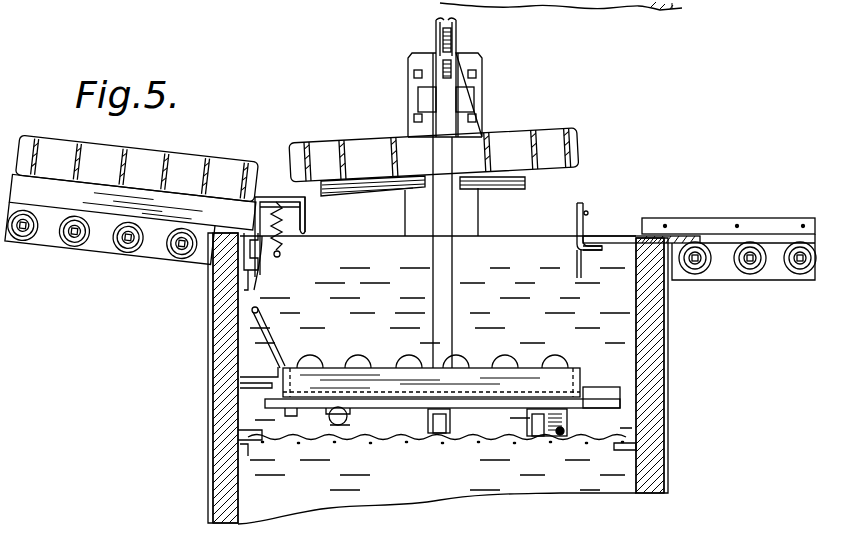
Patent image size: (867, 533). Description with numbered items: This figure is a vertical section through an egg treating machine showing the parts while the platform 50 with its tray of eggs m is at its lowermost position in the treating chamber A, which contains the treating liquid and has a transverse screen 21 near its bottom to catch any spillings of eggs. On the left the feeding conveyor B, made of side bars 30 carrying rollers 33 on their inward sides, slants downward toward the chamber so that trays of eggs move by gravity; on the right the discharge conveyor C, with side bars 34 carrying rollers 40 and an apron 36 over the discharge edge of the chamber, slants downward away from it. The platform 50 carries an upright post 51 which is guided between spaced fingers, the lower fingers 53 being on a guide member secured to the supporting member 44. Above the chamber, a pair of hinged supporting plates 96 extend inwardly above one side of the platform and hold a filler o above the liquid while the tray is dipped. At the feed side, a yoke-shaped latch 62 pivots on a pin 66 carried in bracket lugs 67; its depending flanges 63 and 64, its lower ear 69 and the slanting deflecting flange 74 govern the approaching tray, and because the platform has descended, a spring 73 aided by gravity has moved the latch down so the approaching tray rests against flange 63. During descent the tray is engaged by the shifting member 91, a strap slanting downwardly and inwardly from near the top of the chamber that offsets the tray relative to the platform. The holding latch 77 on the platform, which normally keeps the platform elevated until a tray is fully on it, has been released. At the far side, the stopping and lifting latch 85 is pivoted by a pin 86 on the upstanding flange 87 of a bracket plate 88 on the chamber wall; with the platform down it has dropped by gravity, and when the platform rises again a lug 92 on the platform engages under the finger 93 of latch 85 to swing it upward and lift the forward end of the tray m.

The treating chamber A is at (198, 401).
The feeding conveyor B is at (85, 269).
The discharge conveyor C is at (811, 297).
The transverse screen 21 is at (390, 438).
The side bars 30 is at (101, 247).
The rotary elements 33 is at (156, 249).
The side bars 34 is at (731, 275).
The apron 36 is at (726, 268).
The rotary members 40 is at (779, 277).
The supporting member 44 is at (470, 215).
The platform 50 is at (490, 406).
The upright bar or post 51 is at (432, 252).
The lower spaced fingers 53 is at (463, 97).
The limiting and lifting member or latch 62 is at (271, 196).
The depending flange 63 is at (262, 252).
The depending flange 64 is at (300, 230).
The pivot pin 66 is at (305, 199).
The bracket lugs 67 is at (306, 216).
The lower flange or ear 69 is at (254, 323).
The spring 73 is at (282, 252).
The deflecting flange 74 is at (252, 285).
The holding latch 77 is at (567, 428).
The stopping and lifting member or latch 85 is at (577, 234).
The pin 86 is at (577, 208).
The upstanding flange 87 is at (588, 216).
The bracket plate 88 is at (616, 237).
The shifting member 91 is at (271, 344).
The lug 92 is at (598, 386).
The finger 93 is at (583, 262).
The supporting members or plates 96 is at (392, 183).
The preceding tray m is at (442, 390).
The preceding filler o is at (434, 155).